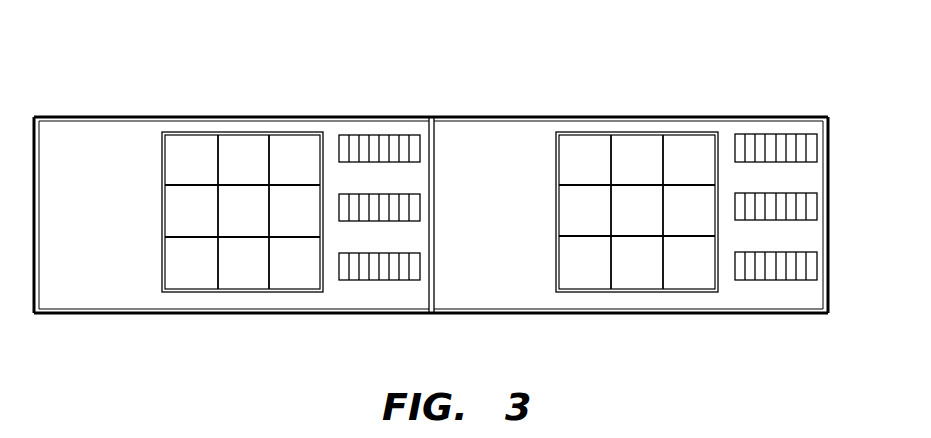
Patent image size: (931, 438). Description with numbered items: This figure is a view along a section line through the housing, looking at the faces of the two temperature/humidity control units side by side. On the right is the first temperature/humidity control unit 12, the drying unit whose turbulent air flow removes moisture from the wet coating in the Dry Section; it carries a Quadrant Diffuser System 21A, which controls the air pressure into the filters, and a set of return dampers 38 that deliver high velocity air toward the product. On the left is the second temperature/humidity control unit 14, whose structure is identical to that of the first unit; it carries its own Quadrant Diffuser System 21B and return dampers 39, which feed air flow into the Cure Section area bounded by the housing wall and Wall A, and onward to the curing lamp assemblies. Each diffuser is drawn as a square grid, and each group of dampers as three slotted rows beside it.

The first temperature/humidity control unit 12 is at (777, 92).
The second temperature/humidity control unit 14 is at (88, 92).
The Quadrant Diffuser System 21A is at (587, 157).
The Quadrant Diffuser System 21B is at (195, 153).
The return dampers 38 is at (771, 268).
The return dampers 39 is at (374, 266).